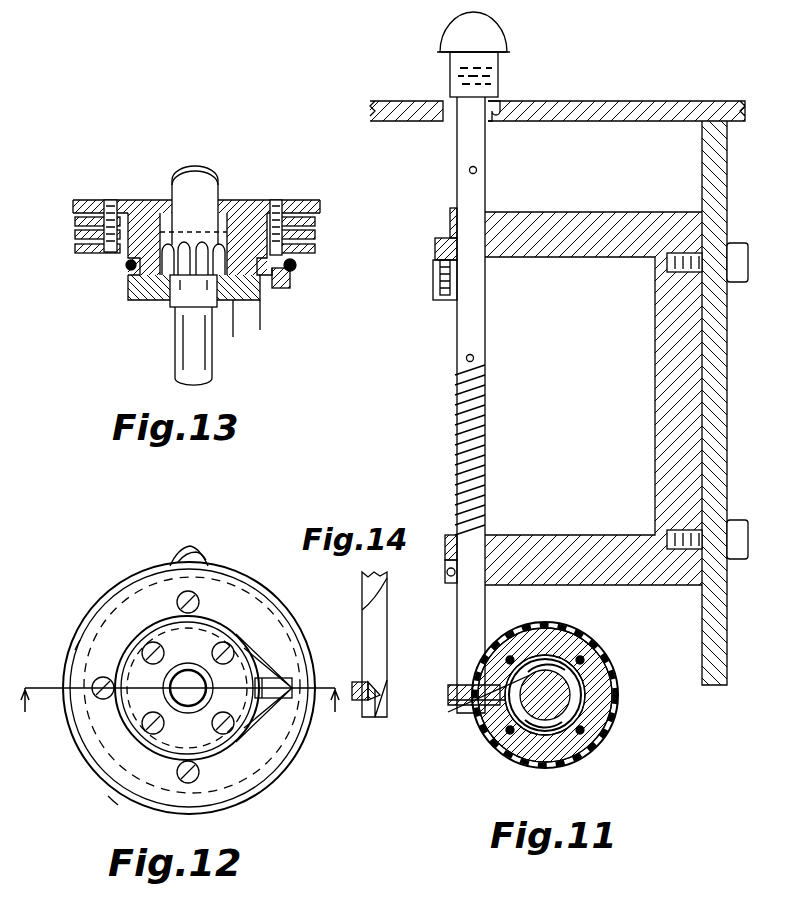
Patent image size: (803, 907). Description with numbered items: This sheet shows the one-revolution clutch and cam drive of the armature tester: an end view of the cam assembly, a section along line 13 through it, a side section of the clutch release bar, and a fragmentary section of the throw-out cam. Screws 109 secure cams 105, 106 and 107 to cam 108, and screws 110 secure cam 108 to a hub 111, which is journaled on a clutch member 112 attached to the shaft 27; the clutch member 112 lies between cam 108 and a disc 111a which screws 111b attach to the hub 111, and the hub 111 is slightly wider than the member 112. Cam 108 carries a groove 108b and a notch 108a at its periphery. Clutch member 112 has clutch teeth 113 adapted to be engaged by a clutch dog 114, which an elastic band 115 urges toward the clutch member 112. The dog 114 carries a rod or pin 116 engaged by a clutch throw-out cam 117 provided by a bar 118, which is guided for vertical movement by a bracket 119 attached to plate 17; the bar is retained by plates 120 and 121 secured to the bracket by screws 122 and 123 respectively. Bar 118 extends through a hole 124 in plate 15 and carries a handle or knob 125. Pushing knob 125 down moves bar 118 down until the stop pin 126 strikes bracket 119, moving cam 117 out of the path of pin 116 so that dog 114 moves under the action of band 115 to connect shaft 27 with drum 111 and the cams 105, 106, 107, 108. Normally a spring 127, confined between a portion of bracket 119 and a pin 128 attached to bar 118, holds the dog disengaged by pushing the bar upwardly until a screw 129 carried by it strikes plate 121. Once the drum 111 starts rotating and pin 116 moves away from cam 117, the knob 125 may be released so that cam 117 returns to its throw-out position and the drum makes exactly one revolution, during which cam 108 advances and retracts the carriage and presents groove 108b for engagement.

In FIG. 11, the plate 15 is at (680, 110).
In FIG. 11, the plate 17 is at (720, 218).
In FIG. 11, the shaft 27 is at (560, 695).
In FIG. 13, the shaft 27 is at (200, 172).
In FIG. 12, the shaft 27 is at (188, 688).
In FIG. 13, the cam 105 is at (315, 249).
In FIG. 12, the cam 105 is at (88, 625).
In FIG. 13, the cam 106 is at (315, 235).
In FIG. 12, the cam 106 is at (128, 585).
In FIG. 13, the cam 107 is at (315, 221).
In FIG. 12, the cam 107 is at (75, 648).
In FIG. 13, the cam 108 is at (320, 206).
In FIG. 12, the cam 108 is at (195, 655).
In FIG. 12, the notch 108a is at (180, 560).
In FIG. 12, the groove 108b is at (198, 552).
In FIG. 13, the screws 109 is at (125, 200).
In FIG. 12, the screws 109 is at (199, 604).
In FIG. 11, the screws 110 is at (600, 645).
In FIG. 13, the screws 110 is at (222, 218).
In FIG. 12, the screws 110 is at (145, 645).
In FIG. 11, the hub 111 is at (585, 645).
In FIG. 13, the hub 111 is at (130, 288).
In FIG. 13, the disc 111a is at (281, 321).
In FIG. 13, the screws 111b is at (242, 329).
In FIG. 11, the clutch member 112 is at (560, 640).
In FIG. 13, the clutch member 112 is at (215, 200).
In FIG. 11, the clutch teeth 113 is at (580, 720).
In FIG. 13, the clutch teeth 113 is at (195, 250).
In FIG. 11, the clutch dog 114 is at (478, 708).
In FIG. 13, the clutch dog 114 is at (292, 285).
In FIG. 12, the clutch dog 114 is at (270, 700).
In FIG. 14, the clutch dog 114 is at (355, 683).
In FIG. 11, the elastic band 115 is at (528, 762).
In FIG. 13, the elastic band 115 is at (297, 266).
In FIG. 12, the elastic band 115 is at (178, 614).
In FIG. 11, the pin 116 is at (455, 710).
In FIG. 13, the pin 116 is at (272, 290).
In FIG. 12, the pin 116 is at (272, 665).
In FIG. 14, the pin 116 is at (378, 690).
In FIG. 14, the clutch throw-out cam 117 is at (380, 695).
In FIG. 11, the bar 118 is at (462, 335).
In FIG. 14, the bar 118 is at (362, 592).
In FIG. 11, the bracket 119 is at (612, 262).
In FIG. 11, the plate 120 is at (445, 542).
In FIG. 11, the plate 121 is at (437, 245).
In FIG. 11, the screws 122 is at (445, 570).
In FIG. 11, the screws 123 is at (450, 226).
In FIG. 11, the hole 124 is at (500, 106).
In FIG. 11, the knob 125 is at (500, 50).
In FIG. 11, the stop pin 126 is at (476, 170).
In FIG. 11, the spring 127 is at (485, 428).
In FIG. 11, the pin 128 is at (474, 358).
In FIG. 11, the screw 129 is at (445, 302).
In FIG. 12, the section line 13 is at (181, 713).